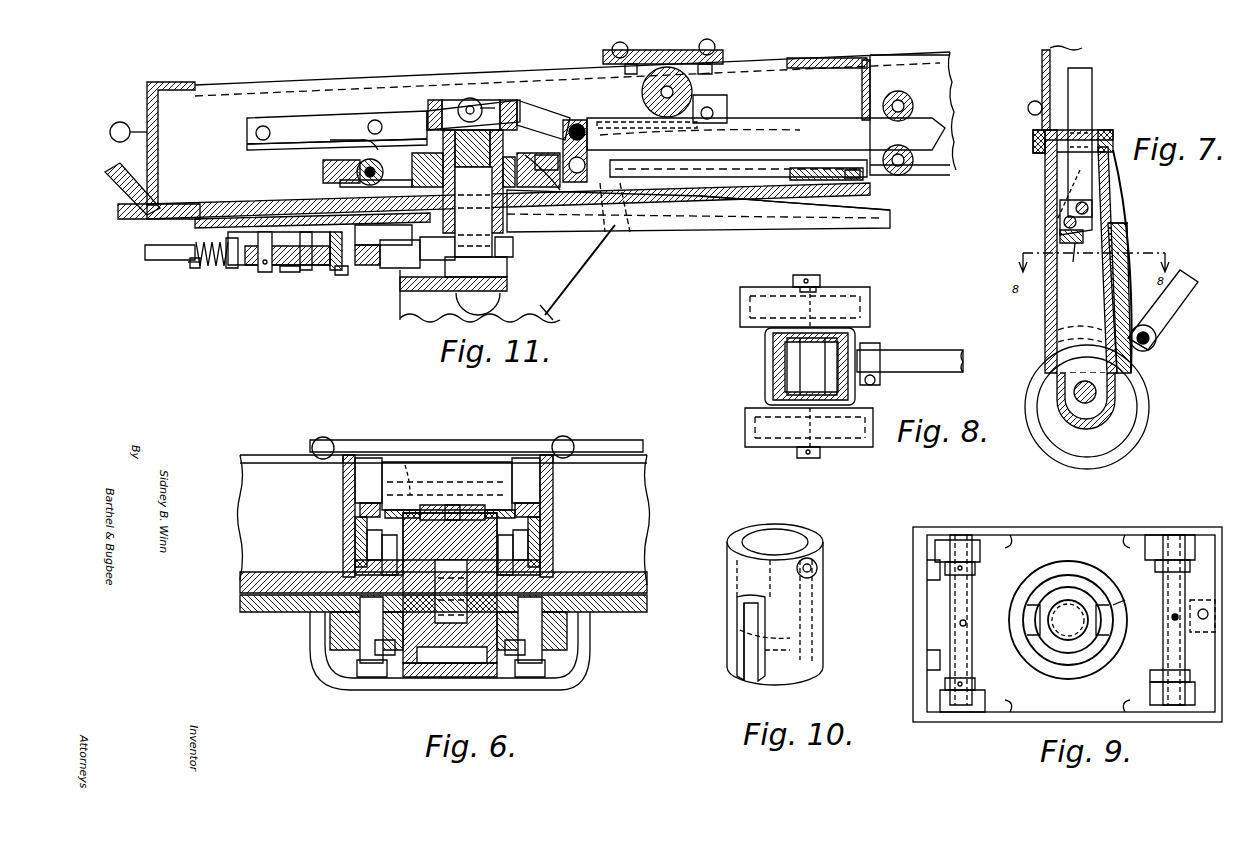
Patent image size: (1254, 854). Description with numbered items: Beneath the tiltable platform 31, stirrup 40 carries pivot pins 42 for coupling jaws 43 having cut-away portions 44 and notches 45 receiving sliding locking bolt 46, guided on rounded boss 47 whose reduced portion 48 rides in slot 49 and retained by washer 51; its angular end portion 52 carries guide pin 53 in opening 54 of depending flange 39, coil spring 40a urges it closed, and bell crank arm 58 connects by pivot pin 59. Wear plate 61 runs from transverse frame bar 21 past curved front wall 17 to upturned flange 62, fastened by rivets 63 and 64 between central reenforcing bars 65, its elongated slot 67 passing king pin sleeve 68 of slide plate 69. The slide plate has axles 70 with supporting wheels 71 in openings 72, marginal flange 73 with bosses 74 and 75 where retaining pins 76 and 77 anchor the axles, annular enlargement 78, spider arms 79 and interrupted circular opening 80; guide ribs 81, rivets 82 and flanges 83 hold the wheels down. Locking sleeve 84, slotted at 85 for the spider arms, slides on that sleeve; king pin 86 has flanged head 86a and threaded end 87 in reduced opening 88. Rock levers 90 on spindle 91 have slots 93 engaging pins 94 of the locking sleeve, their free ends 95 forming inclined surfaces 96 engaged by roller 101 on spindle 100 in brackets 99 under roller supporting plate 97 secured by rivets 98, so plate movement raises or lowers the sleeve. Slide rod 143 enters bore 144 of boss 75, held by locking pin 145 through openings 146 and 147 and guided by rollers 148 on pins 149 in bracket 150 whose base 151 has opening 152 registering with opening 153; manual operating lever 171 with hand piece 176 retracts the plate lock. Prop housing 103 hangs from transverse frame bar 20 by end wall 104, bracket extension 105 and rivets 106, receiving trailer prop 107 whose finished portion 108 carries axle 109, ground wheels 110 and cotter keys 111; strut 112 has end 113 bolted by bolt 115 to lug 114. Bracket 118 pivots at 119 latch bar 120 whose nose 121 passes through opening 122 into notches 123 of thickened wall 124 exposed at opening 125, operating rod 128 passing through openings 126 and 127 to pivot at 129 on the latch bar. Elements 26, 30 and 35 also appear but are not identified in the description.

In FIG. 11, the curved front wall 17 is at (147, 100).
In FIG. 7, the transverse chassis frame bar 20 is at (1042, 68).
In FIG. 11, the transverse frame bar 21 is at (875, 60).
In FIG. 6, the transverse frame bar 21 is at (610, 447).
In FIG. 11, the strut end 26 is at (556, 316).
In FIG. 11, the diagonal strut 30 is at (590, 230).
In FIG. 11, the tiltable fifth wheel platform 31 is at (245, 203).
In FIG. 6, the tiltable fifth wheel platform 31 is at (262, 612).
In FIG. 11, the tapered bar 35 is at (806, 215).
In FIG. 11, the depending flange 39 is at (190, 265).
In FIG. 11, the stirrup 40 is at (480, 296).
In FIG. 6, the stirrup 40 is at (400, 680).
In FIG. 11, the coil spring 40a is at (210, 268).
In FIG. 6, the pivot pins 42 is at (370, 665).
In FIG. 11, the cooperating coupling jaws 43 is at (437, 248).
In FIG. 6, the cooperating coupling jaws 43 is at (340, 630).
In FIG. 11, the cut-away portion 44 is at (515, 248).
In FIG. 6, the cut-away portion 44 is at (385, 660).
In FIG. 11, the notches 45 is at (395, 260).
In FIG. 11, the sliding locking bolt 46 is at (290, 272).
In FIG. 11, the rounded boss 47 is at (383, 235).
In FIG. 11, the reduced portion 48 is at (333, 270).
In FIG. 11, the slot 49 is at (305, 270).
In FIG. 11, the washer 51 is at (338, 277).
In FIG. 11, the angular end portion 52 is at (231, 270).
In FIG. 11, the guide pin 53 is at (145, 252).
In FIG. 11, the opening 54 is at (190, 266).
In FIG. 11, the bell crank arm 58 is at (279, 245).
In FIG. 11, the pivot pin 59 is at (265, 274).
In FIG. 11, the wear plate 61 is at (712, 215).
In FIG. 6, the wear plate 61 is at (647, 585).
In FIG. 11, the upturned flanged portion 62 is at (129, 189).
In FIG. 11, the rivets 63 is at (182, 200).
In FIG. 11, the rivets 64 is at (826, 164).
In FIG. 11, the central reenforcing bars 65 is at (233, 92).
In FIG. 6, the central reenforcing bars 65 is at (343, 497).
In FIG. 11, the elongated slot 67 is at (672, 262).
In FIG. 11, the king pin sleeve 68 is at (565, 240).
In FIG. 9, the king pin sleeve 68 is at (1068, 640).
In FIG. 11, the slide plate 69 is at (340, 183).
In FIG. 6, the slide plate 69 is at (355, 556).
In FIG. 9, the slide plate 69 is at (1095, 545).
In FIG. 11, the axles 70 is at (355, 170).
In FIG. 9, the axles 70 is at (972, 588).
In FIG. 11, the supporting wheels 71 is at (345, 147).
In FIG. 6, the supporting wheels 71 is at (382, 545).
In FIG. 9, the supporting wheels 71 is at (965, 538).
In FIG. 9, the openings 72 is at (978, 562).
In FIG. 9, the marginal flange 73 is at (1032, 540).
In FIG. 9, the boss 74 is at (927, 645).
In FIG. 11, the enlarged boss 75 is at (568, 122).
In FIG. 9, the enlarged boss 75 is at (1150, 598).
In FIG. 11, the retaining pin 76 is at (383, 166).
In FIG. 9, the retaining pin 76 is at (968, 624).
In FIG. 9, the retaining pin 77 is at (1172, 617).
In FIG. 11, the annular enlargement 78 is at (415, 152).
In FIG. 6, the annular enlargement 78 is at (497, 545).
In FIG. 9, the annular enlargement 78 is at (1030, 590).
In FIG. 11, the spider arms 79 is at (420, 120).
In FIG. 9, the spider arms 79 is at (1102, 600).
In FIG. 9, the interrupted circular opening 80 is at (1065, 585).
In FIG. 11, the guide rib 81 is at (300, 117).
In FIG. 6, the guide rib 81 is at (355, 522).
In FIG. 11, the rivets 82 is at (263, 126).
In FIG. 11, the inwardly directed flange 83 is at (325, 142).
In FIG. 6, the inwardly directed flange 83 is at (367, 536).
In FIG. 11, the locking sleeve 84 is at (432, 108).
In FIG. 6, the locking sleeve 84 is at (360, 672).
In FIG. 10, the locking sleeve 84 is at (732, 580).
In FIG. 10, the longitudinal slots 85 is at (805, 612).
In FIG. 11, the king pin 86 is at (473, 193).
In FIG. 6, the king pin 86 is at (450, 588).
In FIG. 9, the king pin 86 is at (1072, 625).
In FIG. 11, the flanged head 86a is at (507, 284).
In FIG. 6, the flanged head 86a is at (440, 677).
In FIG. 11, the upper end 87 is at (490, 109).
In FIG. 6, the upper end 87 is at (457, 508).
In FIG. 11, the threaded reduced opening 88 is at (472, 115).
In FIG. 6, the threaded reduced opening 88 is at (428, 505).
In FIG. 11, the rock levers 90 is at (540, 110).
In FIG. 6, the rock levers 90 is at (450, 510).
In FIG. 11, the spindle 91 is at (577, 123).
In FIG. 11, the slot 93 is at (480, 104).
In FIG. 11, the pin 94 is at (470, 100).
In FIG. 6, the pin 94 is at (450, 507).
In FIG. 11, the free ends of rock levers 95 is at (665, 136).
In FIG. 11, the inclined surface 96 is at (642, 90).
In FIG. 11, the roller supporting plate 97 is at (666, 50).
In FIG. 6, the roller supporting plate 97 is at (437, 440).
In FIG. 11, the rivets 98 is at (620, 42).
In FIG. 6, the rivets 98 is at (323, 437).
In FIG. 11, the roller-supporting brackets 99 is at (712, 72).
In FIG. 6, the roller-supporting brackets 99 is at (357, 486).
In FIG. 11, the spindle 100 is at (727, 105).
In FIG. 11, the roller 101 is at (725, 100).
In FIG. 6, the roller 101 is at (470, 462).
In FIG. 7, the trailer prop housing 103 is at (1045, 315).
In FIG. 8, the trailer prop housing 103 is at (773, 350).
In FIG. 7, the end wall 104 is at (1040, 148).
In FIG. 7, the bracket extension 105 is at (1033, 132).
In FIG. 7, the bolts or rivets 106 is at (1028, 109).
In FIG. 7, the trailer prop 107 is at (1057, 330).
In FIG. 8, the trailer prop 107 is at (787, 366).
In FIG. 7, the finished lower portion 108 is at (1120, 420).
In FIG. 7, the axle 109 is at (1097, 392).
In FIG. 8, the axle 109 is at (798, 457).
In FIG. 7, the ground wheels 110 is at (1040, 440).
In FIG. 8, the ground wheels 110 is at (740, 312).
In FIG. 6, the ground wheels 110 is at (405, 465).
In FIG. 8, the cotter keys 111 is at (812, 281).
In FIG. 7, the strut 112 is at (1180, 300).
In FIG. 8, the strut 112 is at (950, 350).
In FIG. 7, the strut end 113 is at (1150, 336).
In FIG. 8, the strut end 113 is at (880, 382).
In FIG. 7, the lug 114 is at (1152, 352).
In FIG. 7, the bolt 115 is at (1156, 342).
In FIG. 8, the bolt 115 is at (882, 346).
In FIG. 7, the bracket 118 is at (1084, 255).
In FIG. 7, the pivot 119 is at (1060, 235).
In FIG. 7, the latch bar 120 is at (1064, 218).
In FIG. 7, the nose 121 is at (1090, 203).
In FIG. 7, the opening 122 is at (1094, 212).
In FIG. 7, the alined notches 123 is at (1112, 272).
In FIG. 7, the wall 124 is at (1130, 236).
In FIG. 7, the opening 125 is at (1081, 340).
In FIG. 7, the opening 126 is at (1113, 145).
In FIG. 7, the opening 127 is at (1106, 128).
In FIG. 7, the operating rod 128 is at (1085, 80).
In FIG. 7, the pivot 129 is at (1070, 195).
In FIG. 11, the slide rod 143 is at (790, 122).
In FIG. 11, the bore 144 is at (630, 165).
In FIG. 9, the bore 144 is at (1210, 600).
In FIG. 11, the transverse locking pin 145 is at (628, 215).
In FIG. 11, the opening 146 is at (650, 230).
In FIG. 9, the opening 146 is at (1208, 614).
In FIG. 11, the alined opening 147 is at (615, 142).
In FIG. 11, the guide rollers 148 is at (910, 100).
In FIG. 11, the pins 149 is at (900, 92).
In FIG. 11, the bracket 150 is at (880, 75).
In FIG. 11, the base 151 is at (895, 180).
In FIG. 11, the opening 152 is at (849, 163).
In FIG. 11, the opening 153 is at (862, 104).
In FIG. 11, the manual operating lever 171 is at (138, 130).
In FIG. 11, the manual hand piece 176 is at (110, 131).